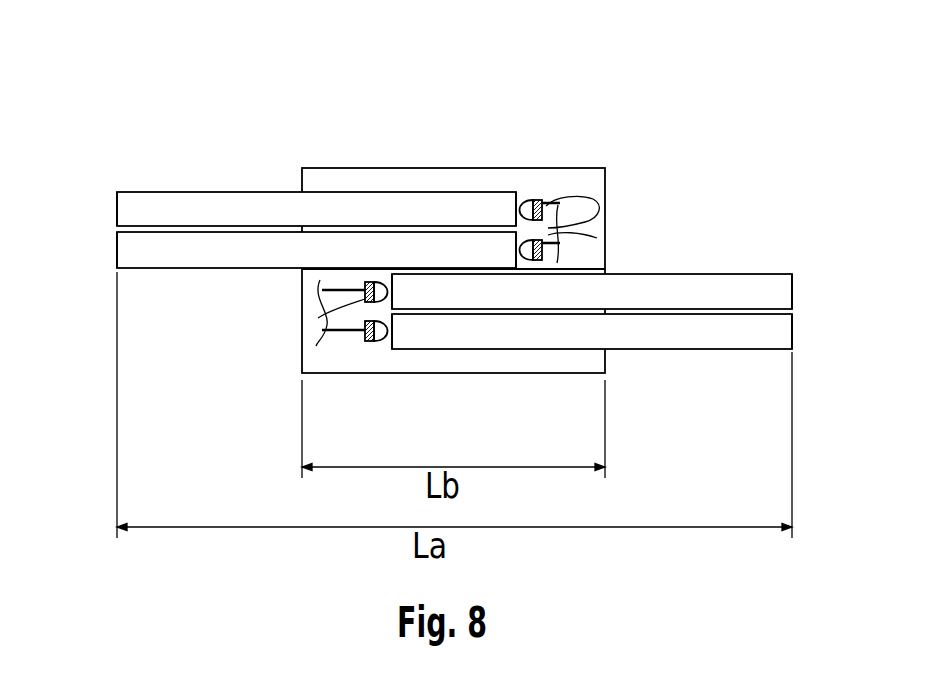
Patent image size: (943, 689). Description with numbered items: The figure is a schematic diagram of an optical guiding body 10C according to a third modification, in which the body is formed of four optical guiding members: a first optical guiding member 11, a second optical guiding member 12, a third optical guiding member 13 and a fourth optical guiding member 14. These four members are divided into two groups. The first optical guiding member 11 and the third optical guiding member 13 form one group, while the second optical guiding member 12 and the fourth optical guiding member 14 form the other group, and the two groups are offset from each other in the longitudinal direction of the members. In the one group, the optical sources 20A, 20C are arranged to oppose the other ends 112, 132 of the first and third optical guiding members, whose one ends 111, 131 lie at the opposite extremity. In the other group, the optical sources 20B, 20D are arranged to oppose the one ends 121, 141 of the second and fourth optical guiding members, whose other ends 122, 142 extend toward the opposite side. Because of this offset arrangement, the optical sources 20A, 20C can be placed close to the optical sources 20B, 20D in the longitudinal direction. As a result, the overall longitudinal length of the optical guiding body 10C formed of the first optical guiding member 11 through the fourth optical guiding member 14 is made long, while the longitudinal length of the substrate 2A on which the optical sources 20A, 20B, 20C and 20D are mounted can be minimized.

The optical guiding body 10C is at (454, 186).
The first optical guiding member 11 is at (284, 192).
The third optical guiding member 13 is at (340, 232).
The fourth optical guiding member 14 is at (419, 274).
The second optical guiding member 12 is at (483, 313).
The one end 111 is at (117, 208).
The other end 112 is at (545, 197).
The one end 131 is at (117, 250).
The other end 132 is at (545, 242).
The one end 141 is at (324, 326).
The other end 142 is at (792, 290).
The one end 121 is at (392, 348).
The other end 122 is at (792, 330).
The optical source 20A is at (597, 208).
The optical source 20B is at (365, 337).
The optical source 20C is at (558, 246).
The optical source 20D is at (362, 283).
The substrate 2A is at (520, 375).